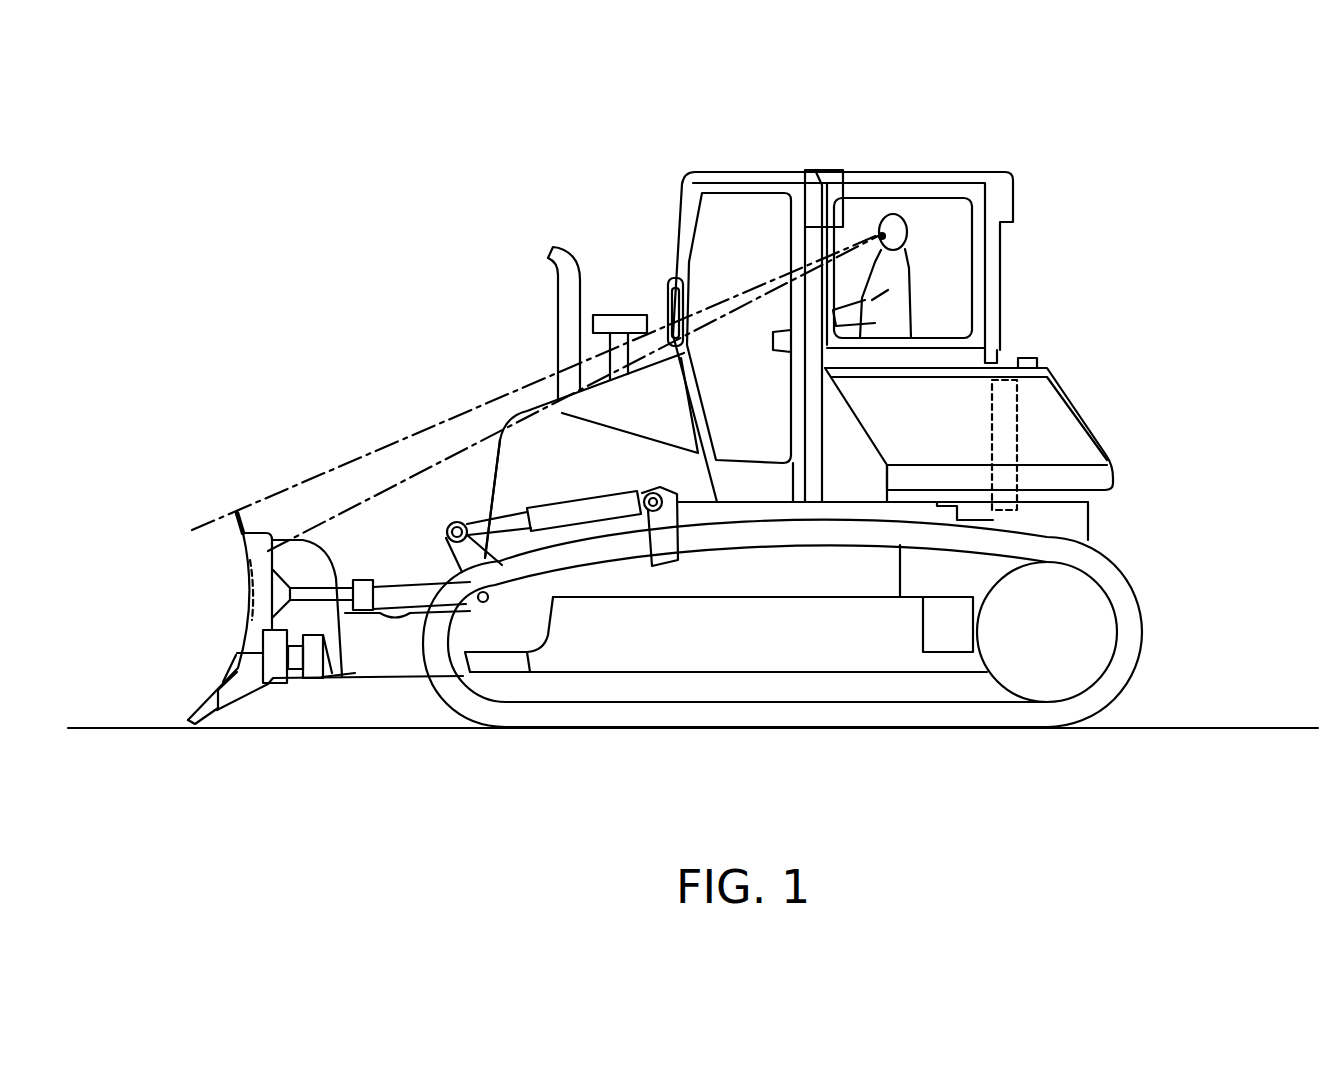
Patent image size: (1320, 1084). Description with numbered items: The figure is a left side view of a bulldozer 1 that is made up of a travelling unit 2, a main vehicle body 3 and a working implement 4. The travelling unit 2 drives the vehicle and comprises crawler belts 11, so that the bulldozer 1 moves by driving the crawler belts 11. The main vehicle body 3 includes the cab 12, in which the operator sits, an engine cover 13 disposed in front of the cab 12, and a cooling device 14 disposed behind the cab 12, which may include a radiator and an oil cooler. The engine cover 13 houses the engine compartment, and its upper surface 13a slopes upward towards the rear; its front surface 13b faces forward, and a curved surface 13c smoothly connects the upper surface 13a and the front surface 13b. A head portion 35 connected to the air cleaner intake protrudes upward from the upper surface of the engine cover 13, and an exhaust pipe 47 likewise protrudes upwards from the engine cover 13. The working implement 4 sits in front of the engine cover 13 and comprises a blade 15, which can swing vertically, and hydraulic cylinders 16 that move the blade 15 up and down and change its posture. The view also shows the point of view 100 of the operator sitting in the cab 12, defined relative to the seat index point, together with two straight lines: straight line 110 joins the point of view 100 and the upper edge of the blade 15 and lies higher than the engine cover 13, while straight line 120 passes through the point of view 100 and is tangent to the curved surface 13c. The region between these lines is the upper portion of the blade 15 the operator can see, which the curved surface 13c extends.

The bulldozer 1 is at (348, 172).
The travelling unit 2 is at (1177, 595).
The main vehicle body 3 is at (1075, 250).
The working implement 4 is at (222, 502).
The crawler belts 11 is at (1125, 577).
The cab 12 is at (772, 193).
The engine cover 13 is at (532, 412).
The upper surface of the engine cover 13a is at (552, 402).
The front surface of the engine cover 13b is at (462, 486).
The curved surface 13c is at (435, 427).
The cooling device 14 is at (1020, 433).
The blade 15 is at (238, 690).
The hydraulic cylinders 16 is at (395, 580).
The head portion 35 is at (627, 313).
The exhaust pipe 47 is at (557, 308).
The point of view 100 is at (878, 217).
The straight line 110 is at (435, 427).
The straight line 120 is at (243, 560).